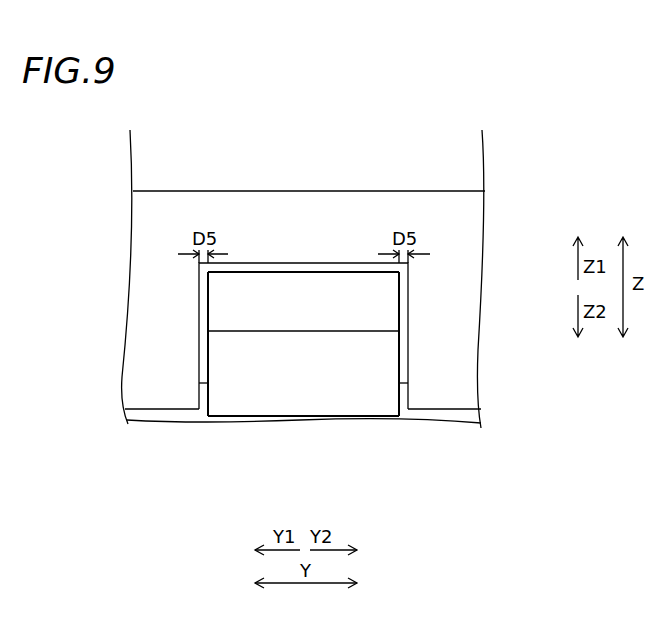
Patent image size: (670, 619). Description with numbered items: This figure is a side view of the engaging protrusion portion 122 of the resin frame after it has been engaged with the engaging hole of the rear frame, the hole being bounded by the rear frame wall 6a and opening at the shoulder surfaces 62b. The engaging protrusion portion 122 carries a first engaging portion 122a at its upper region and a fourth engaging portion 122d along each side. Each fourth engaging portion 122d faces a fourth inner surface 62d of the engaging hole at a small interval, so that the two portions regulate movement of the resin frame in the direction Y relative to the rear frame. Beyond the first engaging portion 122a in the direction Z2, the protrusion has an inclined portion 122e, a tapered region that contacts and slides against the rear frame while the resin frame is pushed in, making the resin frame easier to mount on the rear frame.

The housing portion of casing 6a is at (453, 277).
The shoulder portion of housing 62b is at (203, 404).
The fourth inner surface 62d is at (200, 357).
The engaging protrusion portion 122 is at (282, 303).
The first engaging portion 122a is at (348, 272).
The fourth engaging portion 122d is at (201, 342).
The inclined portion 122e is at (303, 393).